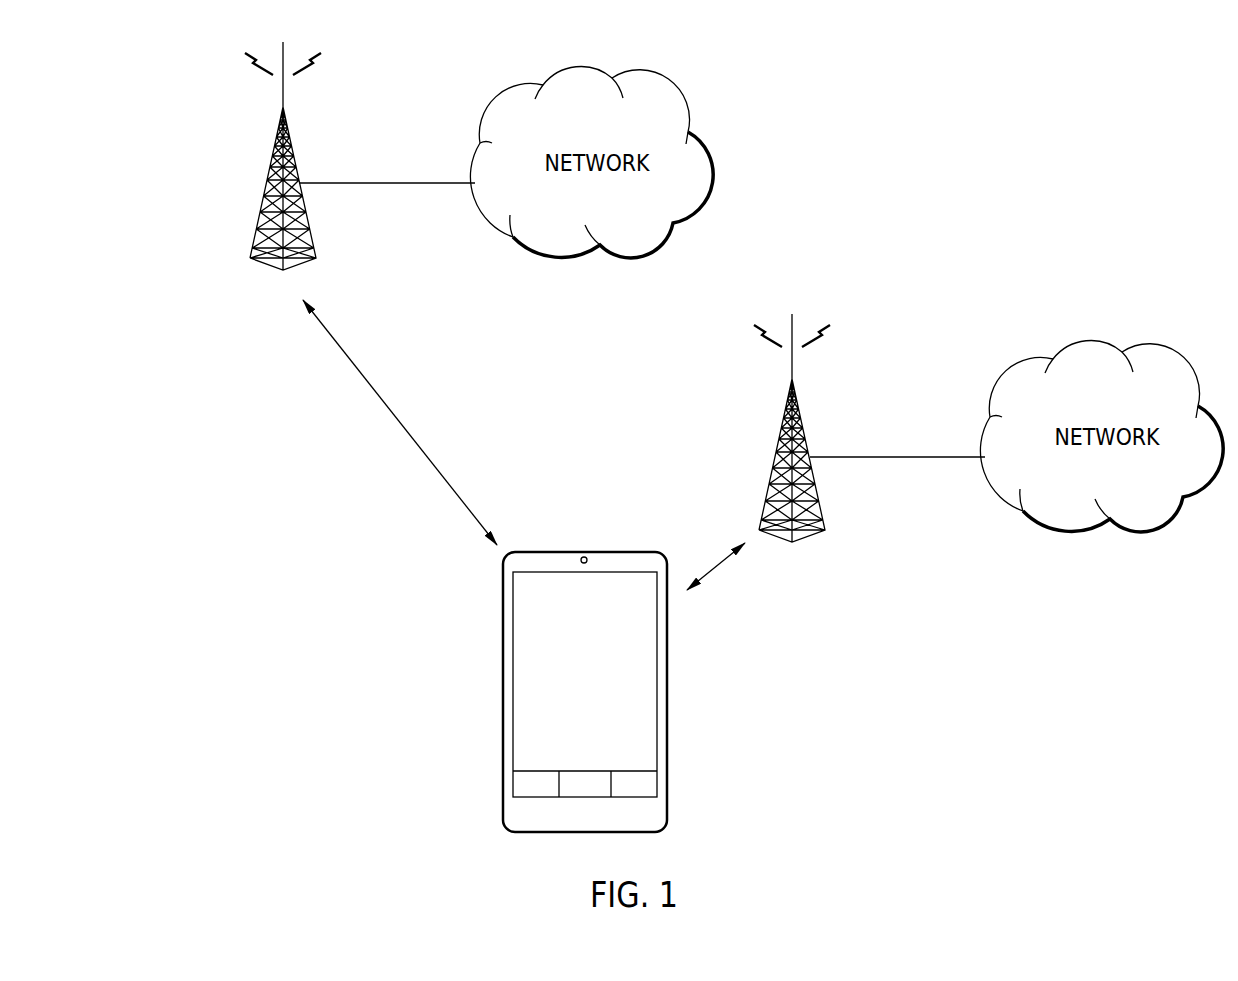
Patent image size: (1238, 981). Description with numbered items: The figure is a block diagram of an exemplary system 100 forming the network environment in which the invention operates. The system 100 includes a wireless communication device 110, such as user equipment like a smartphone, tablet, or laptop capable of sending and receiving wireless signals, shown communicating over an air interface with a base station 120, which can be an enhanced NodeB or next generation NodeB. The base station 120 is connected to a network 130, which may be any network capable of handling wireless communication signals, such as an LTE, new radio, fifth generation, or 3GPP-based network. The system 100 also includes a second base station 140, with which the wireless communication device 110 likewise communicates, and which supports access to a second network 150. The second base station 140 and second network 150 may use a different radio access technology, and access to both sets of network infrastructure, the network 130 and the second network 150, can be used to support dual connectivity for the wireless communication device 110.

The system 100 is at (88, 75).
The wireless communication device 110 is at (586, 551).
The base station 120 is at (265, 188).
The network 130 is at (713, 179).
The second base station 140 is at (775, 462).
The second network 150 is at (1087, 343).